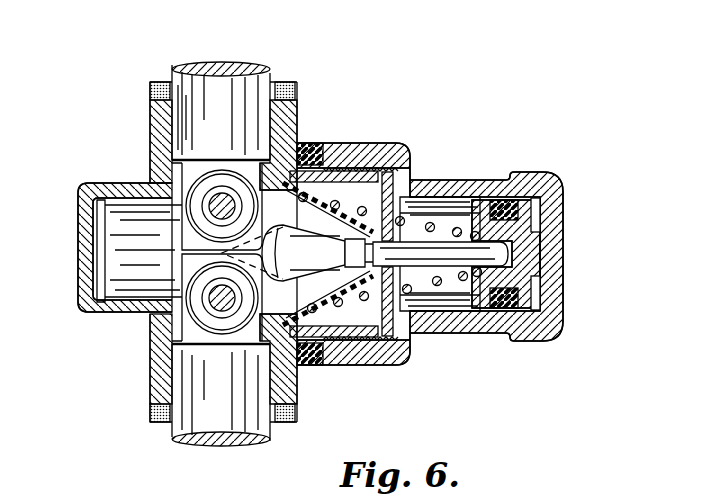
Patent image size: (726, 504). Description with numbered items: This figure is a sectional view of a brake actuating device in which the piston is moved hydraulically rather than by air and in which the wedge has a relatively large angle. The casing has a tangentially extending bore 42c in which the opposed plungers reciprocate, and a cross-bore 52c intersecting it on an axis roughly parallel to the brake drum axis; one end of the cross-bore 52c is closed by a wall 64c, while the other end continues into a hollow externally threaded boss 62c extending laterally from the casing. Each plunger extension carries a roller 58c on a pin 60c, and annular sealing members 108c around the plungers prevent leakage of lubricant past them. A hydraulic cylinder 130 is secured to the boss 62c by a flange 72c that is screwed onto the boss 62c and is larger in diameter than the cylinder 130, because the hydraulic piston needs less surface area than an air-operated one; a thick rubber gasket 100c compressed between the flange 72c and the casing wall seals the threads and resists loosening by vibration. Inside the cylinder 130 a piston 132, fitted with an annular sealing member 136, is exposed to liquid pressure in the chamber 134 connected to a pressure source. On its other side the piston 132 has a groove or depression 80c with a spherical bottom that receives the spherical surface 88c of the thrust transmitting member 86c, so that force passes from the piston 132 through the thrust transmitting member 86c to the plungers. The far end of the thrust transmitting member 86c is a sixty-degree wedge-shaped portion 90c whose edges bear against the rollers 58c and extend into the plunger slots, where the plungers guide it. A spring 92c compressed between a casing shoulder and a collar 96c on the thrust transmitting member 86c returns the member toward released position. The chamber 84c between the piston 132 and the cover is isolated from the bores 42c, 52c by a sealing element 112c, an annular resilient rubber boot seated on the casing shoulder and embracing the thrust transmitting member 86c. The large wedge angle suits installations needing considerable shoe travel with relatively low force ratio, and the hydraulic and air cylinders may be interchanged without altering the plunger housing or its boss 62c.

The tangentially extending bore 42c is at (195, 140).
The cross-bore 52c is at (140, 273).
The roller 58c is at (208, 180).
The pin 60c is at (207, 205).
The externally threaded boss 62c is at (350, 165).
The wall 64c is at (84, 257).
The flange 72c is at (366, 192).
The groove or depression 80c is at (508, 250).
The chamber 84c is at (335, 318).
The thrust transmitting member 86c is at (423, 283).
The spherical surface 88c is at (533, 273).
The wedge-shaped portion 90c is at (250, 140).
The spring 92c is at (388, 178).
The collar 96c is at (478, 300).
The rubber gasket 100c is at (310, 365).
The annular sealing member 108c is at (283, 83).
The sealing element 112c is at (335, 147).
The hydraulic cylinder 130 is at (460, 188).
The piston 132 is at (533, 297).
The chamber 134 is at (555, 207).
The annular sealing member 136 is at (511, 174).